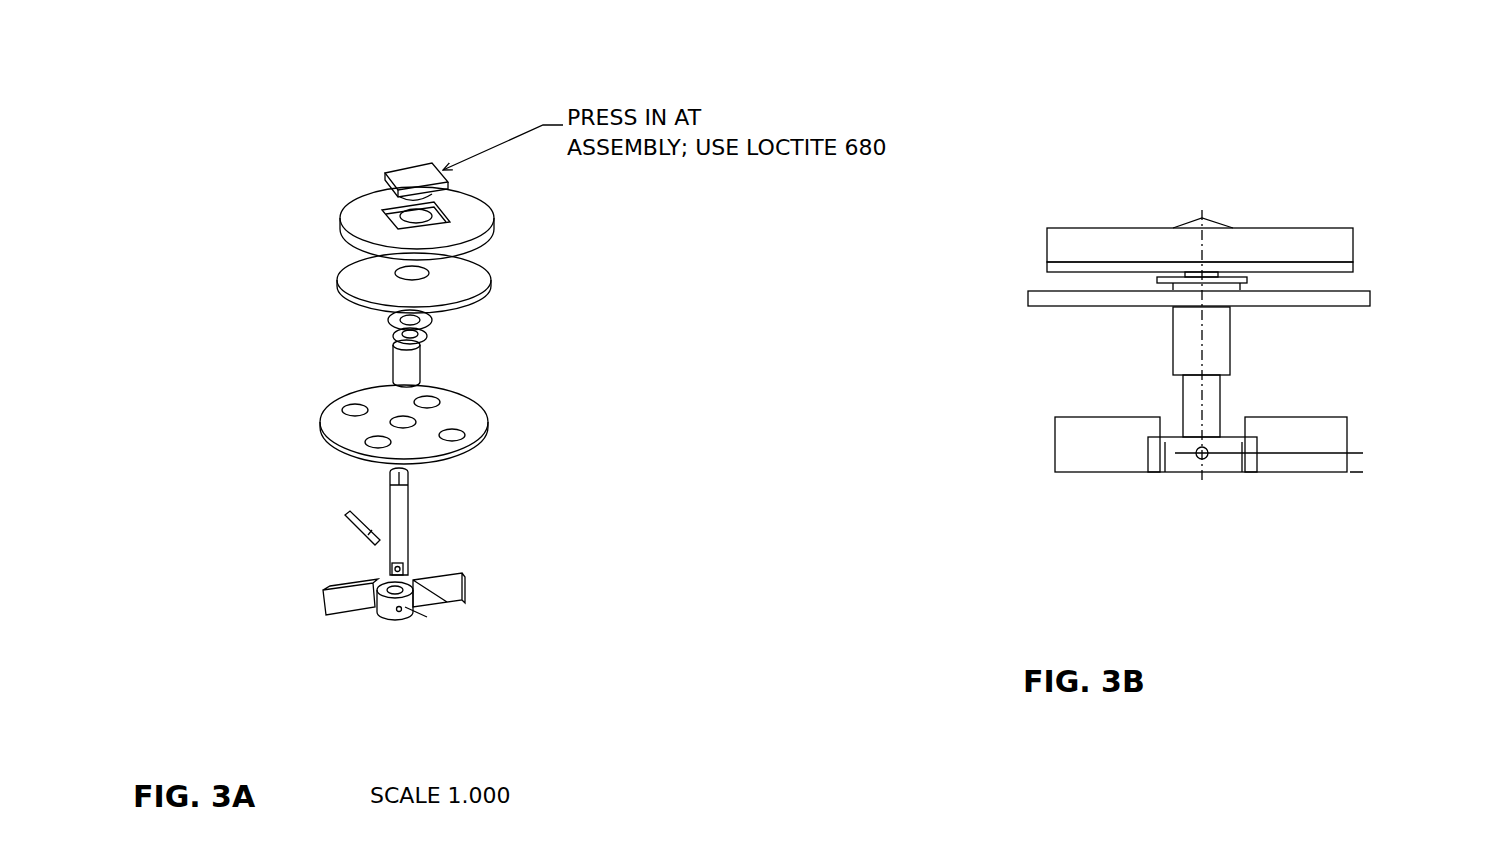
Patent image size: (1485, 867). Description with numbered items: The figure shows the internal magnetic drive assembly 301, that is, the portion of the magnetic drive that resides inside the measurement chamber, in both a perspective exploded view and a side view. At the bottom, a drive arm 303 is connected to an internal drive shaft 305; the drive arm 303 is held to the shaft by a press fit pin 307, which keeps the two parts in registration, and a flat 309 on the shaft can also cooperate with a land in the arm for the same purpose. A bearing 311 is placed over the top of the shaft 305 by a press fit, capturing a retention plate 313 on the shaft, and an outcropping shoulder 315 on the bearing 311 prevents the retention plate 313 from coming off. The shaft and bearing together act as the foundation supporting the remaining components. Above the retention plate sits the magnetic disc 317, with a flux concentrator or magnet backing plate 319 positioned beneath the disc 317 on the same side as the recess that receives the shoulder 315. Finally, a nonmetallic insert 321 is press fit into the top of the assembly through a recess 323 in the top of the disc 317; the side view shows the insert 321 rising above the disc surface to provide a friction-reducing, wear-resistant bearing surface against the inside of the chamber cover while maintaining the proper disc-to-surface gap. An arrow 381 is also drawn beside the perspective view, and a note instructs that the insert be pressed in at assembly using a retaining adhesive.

In FIG. 3B, the internal magnetic drive assembly 301 is at (1282, 592).
In FIG. 3A, the drive arm 303 is at (398, 614).
In FIG. 3B, the drive arm 303 is at (1067, 440).
In FIG. 3A, the internal drive shaft 305 is at (407, 532).
In FIG. 3A, the press fit pin 307 is at (345, 518).
In FIG. 3B, the press fit pin 307 is at (1205, 460).
In FIG. 3A, the flat 309 is at (404, 562).
In FIG. 3B, the flat 309 is at (1220, 395).
In FIG. 3A, the bearing 311 is at (428, 358).
In FIG. 3B, the bearing 311 is at (1232, 338).
In FIG. 3A, the retention plate 313 is at (313, 430).
In FIG. 3B, the retention plate 313 is at (1032, 293).
In FIG. 3A, the outcropping shoulder 315 is at (427, 337).
In FIG. 3B, the outcropping shoulder 315 is at (1173, 283).
In FIG. 3A, the magnetic disc 317 is at (340, 220).
In FIG. 3B, the magnetic disc 317 is at (1060, 240).
In FIG. 3A, the flux concentrator (magnet backing plate) 319 is at (340, 283).
In FIG. 3B, the flux concentrator (magnet backing plate) 319 is at (1350, 268).
In FIG. 3A, the nonmetallic insert 321 is at (400, 162).
In FIG. 3B, the nonmetallic insert 321 is at (1210, 222).
In FIG. 3A, the recess 323 is at (440, 212).
In FIG. 3A, the direction arrow 381 is at (660, 458).